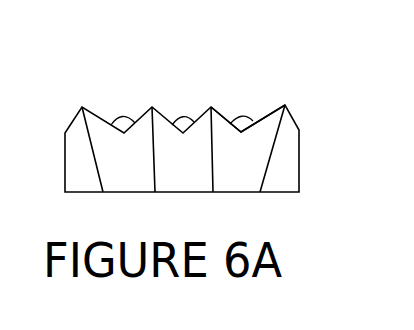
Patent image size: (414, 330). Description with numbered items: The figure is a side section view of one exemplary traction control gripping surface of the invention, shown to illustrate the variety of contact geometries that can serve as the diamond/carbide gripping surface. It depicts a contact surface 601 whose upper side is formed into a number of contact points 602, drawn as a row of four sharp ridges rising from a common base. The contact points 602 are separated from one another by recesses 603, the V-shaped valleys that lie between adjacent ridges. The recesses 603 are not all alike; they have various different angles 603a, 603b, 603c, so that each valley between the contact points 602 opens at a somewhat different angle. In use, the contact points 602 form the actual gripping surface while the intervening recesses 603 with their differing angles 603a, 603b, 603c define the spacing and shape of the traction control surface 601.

The contact surface 601 is at (301, 157).
The contact points 602 is at (285, 107).
The recesses 603 is at (265, 103).
The angle 603a is at (246, 112).
The angle 603b is at (181, 117).
The angle 603c is at (117, 116).